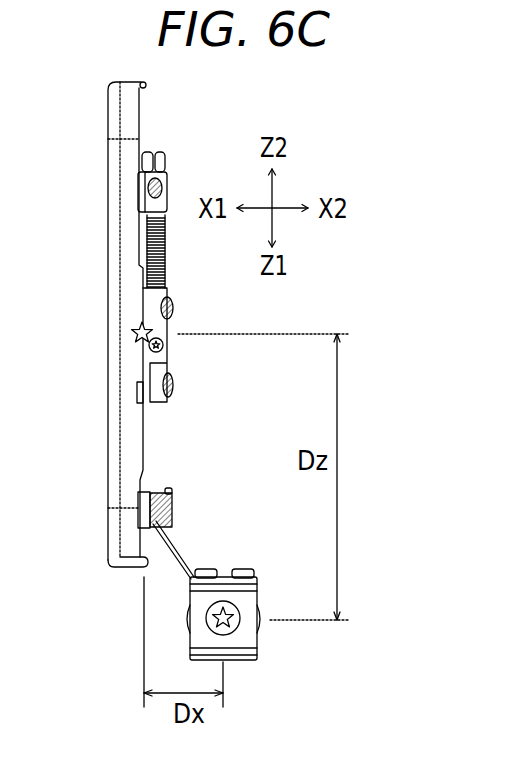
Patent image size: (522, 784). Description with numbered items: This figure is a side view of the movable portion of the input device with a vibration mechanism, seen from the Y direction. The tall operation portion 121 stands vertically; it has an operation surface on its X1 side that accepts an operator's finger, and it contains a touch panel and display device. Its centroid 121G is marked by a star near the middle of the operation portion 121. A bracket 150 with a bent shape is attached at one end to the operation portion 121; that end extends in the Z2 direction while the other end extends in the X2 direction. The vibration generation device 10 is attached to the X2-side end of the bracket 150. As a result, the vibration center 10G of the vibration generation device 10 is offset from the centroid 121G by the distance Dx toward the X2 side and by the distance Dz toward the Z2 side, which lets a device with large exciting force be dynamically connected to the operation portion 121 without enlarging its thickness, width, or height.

The operation portion 121 is at (133, 122).
The centroid of the operation portion 121G is at (133, 333).
The bracket 150 is at (178, 556).
The vibration generation device 10 is at (260, 594).
The vibration center 10G is at (240, 622).